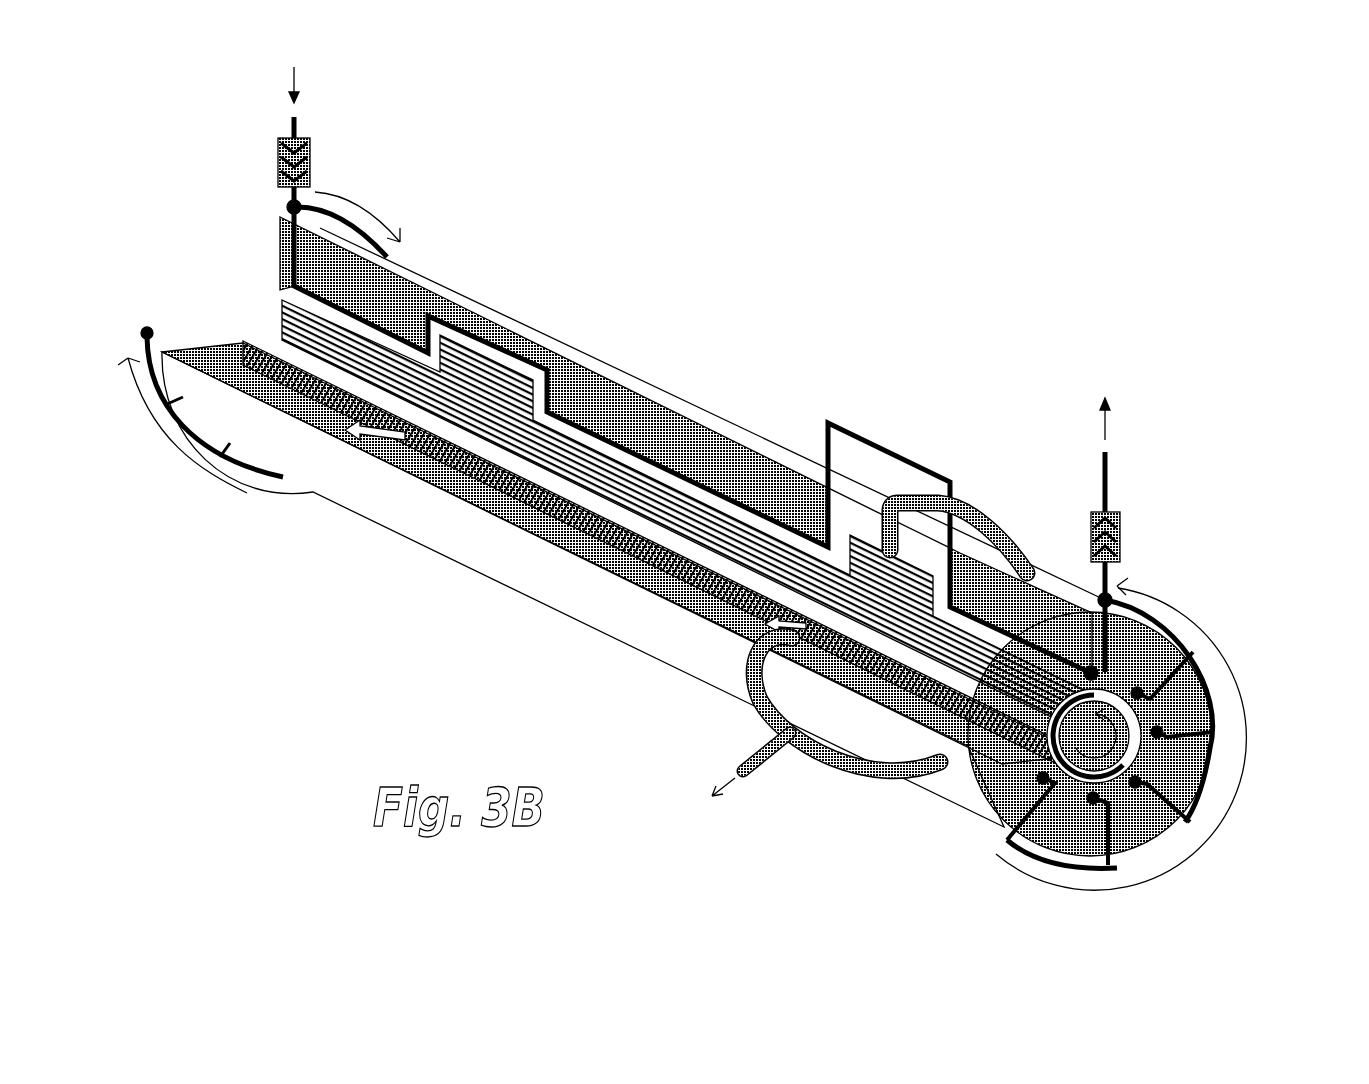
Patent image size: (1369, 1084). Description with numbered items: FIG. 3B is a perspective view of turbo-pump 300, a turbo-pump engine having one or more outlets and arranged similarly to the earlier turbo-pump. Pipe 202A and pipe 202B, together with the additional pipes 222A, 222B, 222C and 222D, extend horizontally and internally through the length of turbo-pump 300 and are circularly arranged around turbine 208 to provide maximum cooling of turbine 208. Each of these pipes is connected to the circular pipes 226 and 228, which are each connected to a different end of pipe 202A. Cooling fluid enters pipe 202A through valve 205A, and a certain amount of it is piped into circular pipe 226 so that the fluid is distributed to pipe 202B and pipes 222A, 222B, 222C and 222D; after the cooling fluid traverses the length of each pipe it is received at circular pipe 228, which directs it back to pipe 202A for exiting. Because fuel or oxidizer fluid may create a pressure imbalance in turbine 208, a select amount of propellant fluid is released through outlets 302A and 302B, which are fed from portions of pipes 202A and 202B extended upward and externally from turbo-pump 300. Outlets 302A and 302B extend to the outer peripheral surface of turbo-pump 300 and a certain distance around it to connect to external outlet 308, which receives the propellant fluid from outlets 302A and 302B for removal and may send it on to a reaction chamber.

The valve 205A is at (310, 177).
The turbo-pump 300 is at (660, 397).
The outlet 302A is at (923, 490).
The pipe 202A is at (1103, 490).
The pipe 222A is at (1187, 657).
The circular pipe 228 is at (1240, 668).
The pipe 222B is at (1235, 742).
The pipe 222C is at (1197, 810).
The pipe 222D is at (1128, 865).
The turbine 208 is at (1102, 873).
The pipe 202B is at (1008, 850).
The outlet 302B is at (860, 783).
The external outlet 308 is at (747, 760).
The circular pipe 226 is at (168, 420).